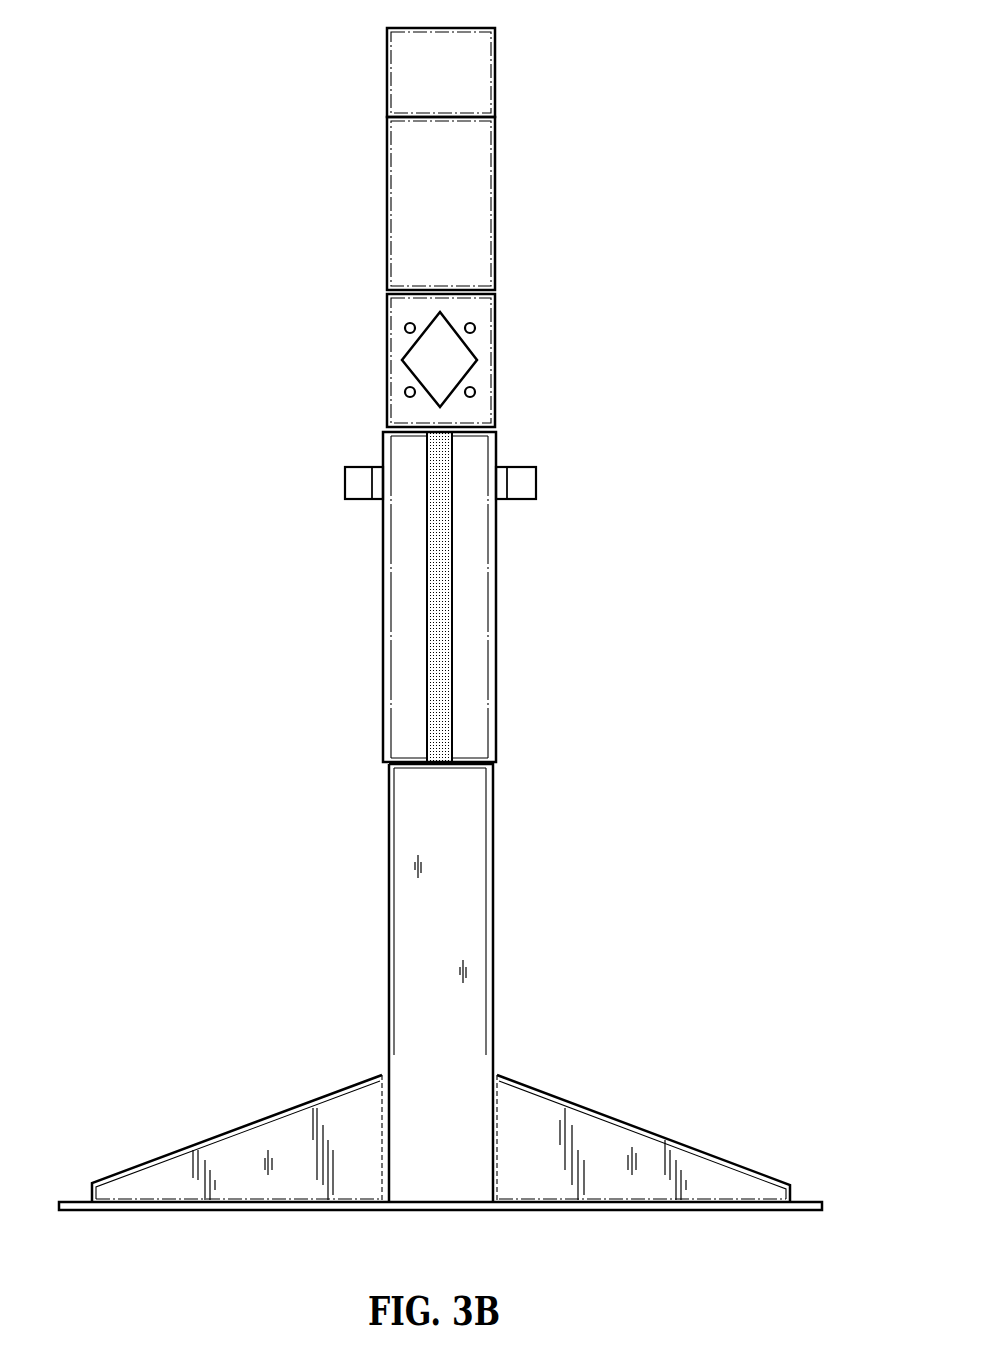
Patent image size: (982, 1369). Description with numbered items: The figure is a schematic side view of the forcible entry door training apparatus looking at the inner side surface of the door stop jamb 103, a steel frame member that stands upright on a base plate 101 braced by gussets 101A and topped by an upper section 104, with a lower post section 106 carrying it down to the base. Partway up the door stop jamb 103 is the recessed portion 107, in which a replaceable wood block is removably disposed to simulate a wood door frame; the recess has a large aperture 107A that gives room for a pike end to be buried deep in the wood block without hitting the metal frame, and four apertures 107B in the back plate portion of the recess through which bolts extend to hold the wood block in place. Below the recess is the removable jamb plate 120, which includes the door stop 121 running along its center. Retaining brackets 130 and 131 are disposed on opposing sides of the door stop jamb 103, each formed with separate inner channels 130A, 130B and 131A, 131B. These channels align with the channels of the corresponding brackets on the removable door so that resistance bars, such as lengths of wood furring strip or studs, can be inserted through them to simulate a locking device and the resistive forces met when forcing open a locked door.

The base plate 101 is at (812, 1212).
The gusset 101A is at (640, 1140).
The door stop jamb 103 is at (477, 188).
The post top section 104 is at (495, 78).
The lower post 106 is at (433, 1182).
The recessed portion 107 is at (483, 349).
The large aperture 107A is at (462, 360).
The apertures 107B is at (474, 394).
The removable jamb plate 120 is at (469, 597).
The door stop 121 is at (442, 669).
The retaining bracket 130 is at (340, 495).
The inner channel 130A is at (378, 498).
The inner channel 130B is at (359, 494).
The retaining bracket 131 is at (555, 498).
The inner channel 131A is at (501, 498).
The inner channel 131B is at (520, 498).